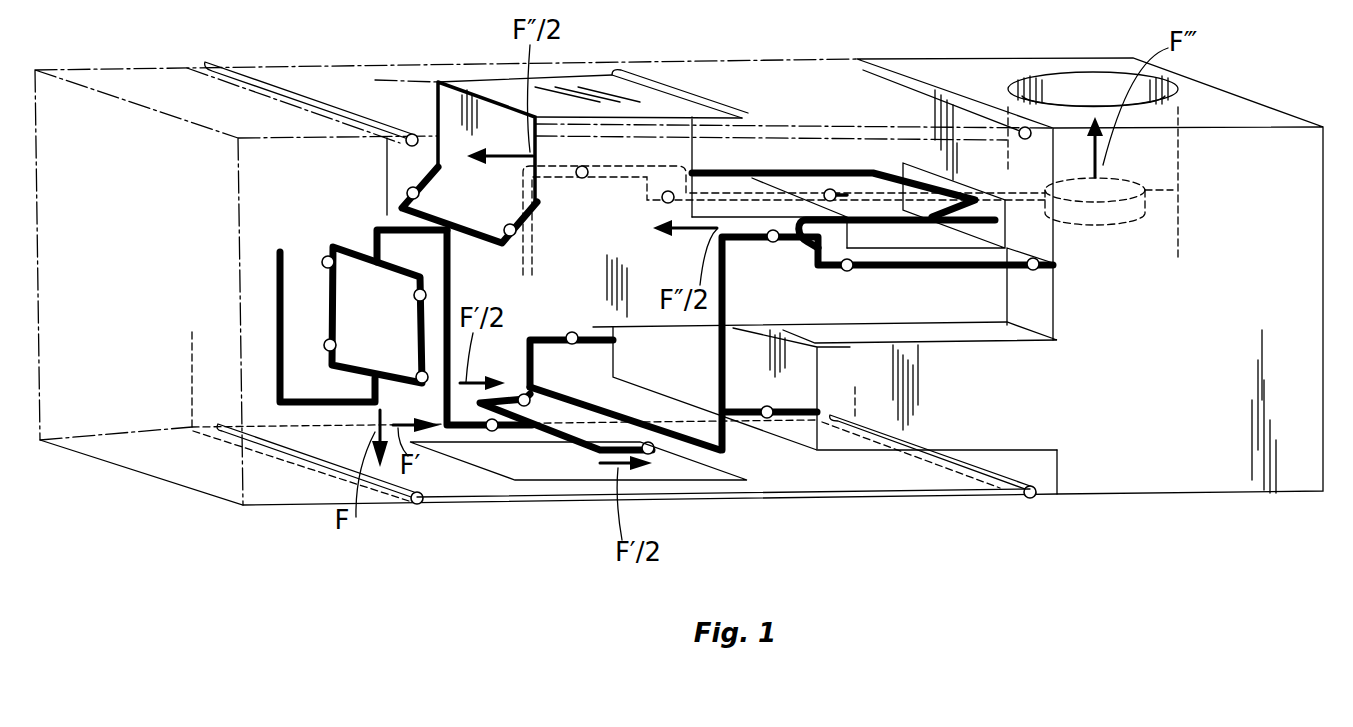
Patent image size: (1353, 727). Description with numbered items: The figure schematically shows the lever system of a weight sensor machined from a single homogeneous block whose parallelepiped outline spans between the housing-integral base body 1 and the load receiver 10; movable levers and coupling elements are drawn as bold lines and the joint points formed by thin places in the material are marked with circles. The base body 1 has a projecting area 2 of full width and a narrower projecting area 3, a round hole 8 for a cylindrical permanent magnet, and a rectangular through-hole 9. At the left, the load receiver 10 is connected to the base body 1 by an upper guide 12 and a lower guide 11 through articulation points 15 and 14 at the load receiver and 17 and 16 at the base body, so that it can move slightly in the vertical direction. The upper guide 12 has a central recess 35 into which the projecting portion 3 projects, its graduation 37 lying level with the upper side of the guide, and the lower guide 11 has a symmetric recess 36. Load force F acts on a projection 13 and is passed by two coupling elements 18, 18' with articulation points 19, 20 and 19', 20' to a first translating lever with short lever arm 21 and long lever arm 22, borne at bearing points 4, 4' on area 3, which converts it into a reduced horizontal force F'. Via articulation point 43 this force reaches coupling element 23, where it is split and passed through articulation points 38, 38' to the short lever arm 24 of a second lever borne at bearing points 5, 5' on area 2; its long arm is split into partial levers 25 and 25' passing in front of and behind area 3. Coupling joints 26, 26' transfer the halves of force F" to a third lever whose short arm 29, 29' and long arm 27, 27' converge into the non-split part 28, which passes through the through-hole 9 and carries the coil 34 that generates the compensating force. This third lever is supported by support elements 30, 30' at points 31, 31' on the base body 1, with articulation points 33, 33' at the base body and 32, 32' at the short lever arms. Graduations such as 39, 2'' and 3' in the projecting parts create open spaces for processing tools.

The housing-integral base body 1 is at (1187, 468).
The projecting area 2 is at (937, 495).
The graduation 2'' is at (997, 369).
The projecting area 3 is at (582, 167).
The graduation 3' is at (927, 386).
The bearing point 4 is at (539, 240).
The bearing point 4' is at (442, 202).
The bearing point 5 is at (787, 389).
The bearing point 5' is at (592, 358).
The round hole 8 is at (1040, 90).
The through-hole 9 is at (913, 163).
The load receiver 10 is at (137, 460).
The lower guide 11 is at (900, 495).
The upper guide 12 is at (717, 62).
The projection 13 is at (280, 325).
The articulation point 14 is at (415, 504).
The articulation point 15 is at (411, 134).
The articulation point 16 is at (1032, 498).
The articulation point 17 is at (1030, 128).
The coupling element 18 is at (377, 315).
The coupling element 18' is at (307, 293).
The articulation point 19 is at (390, 361).
The articulation point 19' is at (310, 364).
The articulation point 20 is at (389, 283).
The articulation point 20' is at (305, 242).
The short lever arm 21 is at (370, 240).
The long lever arm 22 is at (448, 282).
The coupling element 23 is at (592, 452).
The short lever arm 24 is at (733, 452).
The partial lever 25 is at (685, 370).
The partial lever 25' is at (557, 290).
The coupling joint 26 is at (759, 259).
The coupling joint 26' is at (784, 220).
The long lever arm 27 is at (825, 352).
The long lever arm 27' is at (833, 160).
The long lever arm part 28 is at (1173, 190).
The short lever arm 29 is at (887, 261).
The short lever arm 29' is at (648, 231).
The support element 30 is at (950, 244).
The support element 30' is at (769, 195).
The bearing point 31 is at (1074, 295).
The bearing point 31' is at (876, 157).
The articulation point 32 is at (831, 287).
The articulation point 32' is at (677, 167).
The articulation point 33 is at (1029, 290).
The articulation point 33' is at (829, 171).
The coil 34 is at (1113, 218).
The recess 35 is at (423, 78).
The recess 36 is at (517, 468).
The graduation 37 is at (497, 88).
The articulation point 38 is at (676, 492).
The articulation point 38' is at (502, 371).
The graduation 39 is at (694, 158).
The articulation point 43 is at (492, 432).